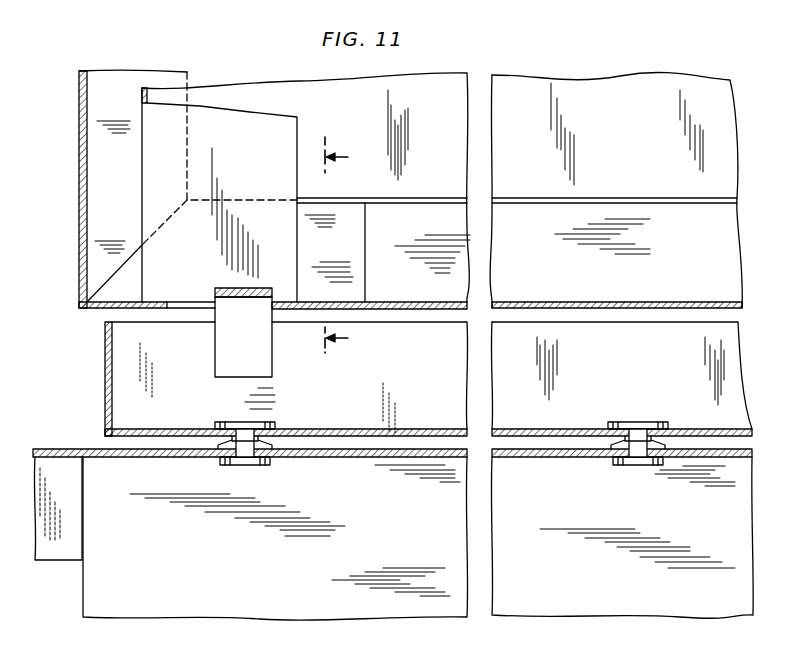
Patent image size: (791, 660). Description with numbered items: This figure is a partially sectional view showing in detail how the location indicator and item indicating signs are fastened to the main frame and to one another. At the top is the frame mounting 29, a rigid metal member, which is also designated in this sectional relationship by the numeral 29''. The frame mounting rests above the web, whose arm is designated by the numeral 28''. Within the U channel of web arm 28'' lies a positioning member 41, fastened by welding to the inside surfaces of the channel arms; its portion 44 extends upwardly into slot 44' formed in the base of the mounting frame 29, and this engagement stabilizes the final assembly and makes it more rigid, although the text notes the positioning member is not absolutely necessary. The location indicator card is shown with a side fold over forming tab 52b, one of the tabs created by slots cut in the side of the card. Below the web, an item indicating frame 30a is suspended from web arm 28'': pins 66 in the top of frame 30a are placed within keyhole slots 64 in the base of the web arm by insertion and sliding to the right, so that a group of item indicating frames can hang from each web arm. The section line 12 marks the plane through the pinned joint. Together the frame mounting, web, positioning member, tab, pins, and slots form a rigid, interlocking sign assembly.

The frame mounting 29 is at (121, 189).
The frame mounting 29'' is at (73, 331).
The tab 52b is at (158, 163).
The portion of positioning member 44 is at (224, 278).
The slot 44' is at (369, 319).
The positioning member 41 is at (260, 368).
The section line 12 is at (352, 245).
The web arm 28'' is at (398, 379).
The item indicating frame 30a is at (79, 430).
The keyhole slot 64 is at (231, 424).
The pin 66 is at (272, 447).